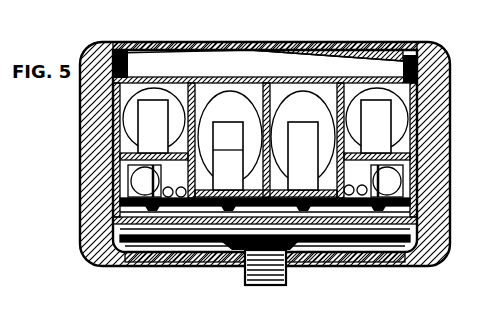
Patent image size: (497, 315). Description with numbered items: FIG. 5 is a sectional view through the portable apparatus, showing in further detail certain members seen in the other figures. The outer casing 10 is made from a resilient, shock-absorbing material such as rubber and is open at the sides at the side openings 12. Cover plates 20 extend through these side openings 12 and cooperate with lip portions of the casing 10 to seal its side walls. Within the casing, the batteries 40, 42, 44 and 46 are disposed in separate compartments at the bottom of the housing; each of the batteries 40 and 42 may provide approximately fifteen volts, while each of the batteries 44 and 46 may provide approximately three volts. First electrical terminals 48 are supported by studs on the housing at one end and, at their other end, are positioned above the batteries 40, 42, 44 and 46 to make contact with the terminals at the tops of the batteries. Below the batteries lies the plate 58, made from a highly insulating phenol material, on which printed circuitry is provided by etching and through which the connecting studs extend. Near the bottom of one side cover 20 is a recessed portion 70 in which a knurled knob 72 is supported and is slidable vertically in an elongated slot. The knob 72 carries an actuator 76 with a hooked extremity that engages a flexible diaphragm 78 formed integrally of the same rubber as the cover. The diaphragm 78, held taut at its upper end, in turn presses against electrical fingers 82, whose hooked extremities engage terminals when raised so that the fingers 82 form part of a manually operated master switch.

The casing 10 is at (240, 155).
The side openings of casing 12 is at (116, 48).
The cover plates 20 is at (332, 43).
The battery 40 is at (300, 93).
The battery 42 is at (214, 97).
The battery 44 is at (370, 95).
The battery 46 is at (152, 90).
The first electrical terminals 48 is at (235, 129).
The plate 58 is at (118, 201).
The recessed portion 70 is at (333, 258).
The knob 72 is at (255, 286).
The actuator 76 is at (301, 258).
The flexible diaphragm 78 is at (180, 243).
The electrical fingers 82 is at (230, 238).